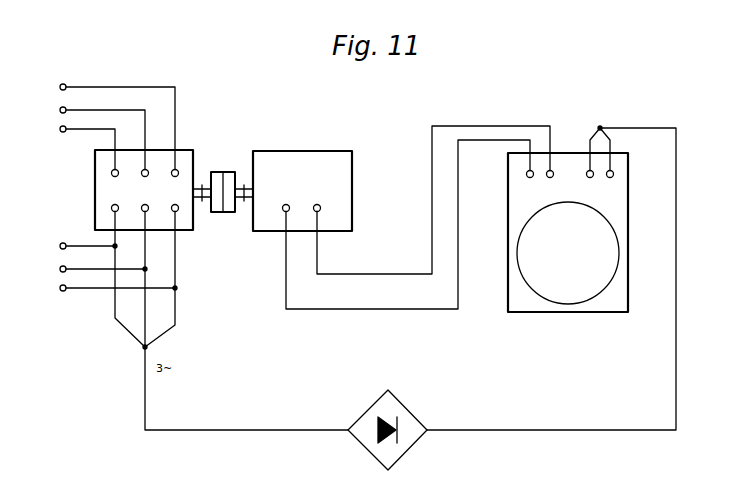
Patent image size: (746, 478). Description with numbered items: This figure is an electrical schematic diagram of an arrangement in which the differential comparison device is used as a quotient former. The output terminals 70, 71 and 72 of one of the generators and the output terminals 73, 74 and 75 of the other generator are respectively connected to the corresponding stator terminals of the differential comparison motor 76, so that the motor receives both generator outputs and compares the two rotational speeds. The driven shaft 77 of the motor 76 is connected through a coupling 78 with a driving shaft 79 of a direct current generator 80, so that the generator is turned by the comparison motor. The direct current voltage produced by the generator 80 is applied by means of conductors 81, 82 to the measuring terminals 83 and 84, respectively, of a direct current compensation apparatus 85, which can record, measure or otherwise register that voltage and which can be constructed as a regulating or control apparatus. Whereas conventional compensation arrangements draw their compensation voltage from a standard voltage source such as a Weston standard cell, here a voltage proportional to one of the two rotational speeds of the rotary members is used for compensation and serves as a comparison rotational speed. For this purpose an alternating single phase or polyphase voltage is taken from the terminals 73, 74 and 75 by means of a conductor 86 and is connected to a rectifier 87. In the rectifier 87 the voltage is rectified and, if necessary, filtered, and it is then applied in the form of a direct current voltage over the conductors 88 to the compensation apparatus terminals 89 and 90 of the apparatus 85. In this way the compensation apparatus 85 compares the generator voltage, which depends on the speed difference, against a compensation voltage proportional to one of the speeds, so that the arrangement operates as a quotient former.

The output terminal 70 is at (60, 86).
The output terminal 71 is at (60, 110).
The output terminal 72 is at (60, 131).
The output terminal 73 is at (60, 245).
The output terminal 74 is at (60, 269).
The output terminal 75 is at (60, 289).
The differential comparison motor 76 is at (121, 158).
The driven shaft 77 is at (202, 201).
The coupling 78 is at (217, 178).
The driving shaft 79 is at (245, 201).
The direct current generator 80 is at (316, 160).
The conductor 81 is at (380, 274).
The conductor 82 is at (382, 312).
The measuring terminal 83 is at (526, 176).
The measuring terminal 84 is at (552, 168).
The direct current compensation apparatus 85 is at (588, 290).
The conductor 86 is at (216, 428).
The rectifier 87 is at (397, 405).
The conductors 88 is at (540, 428).
The compensation apparatus terminal 89 is at (588, 168).
The compensation apparatus terminal 90 is at (614, 173).